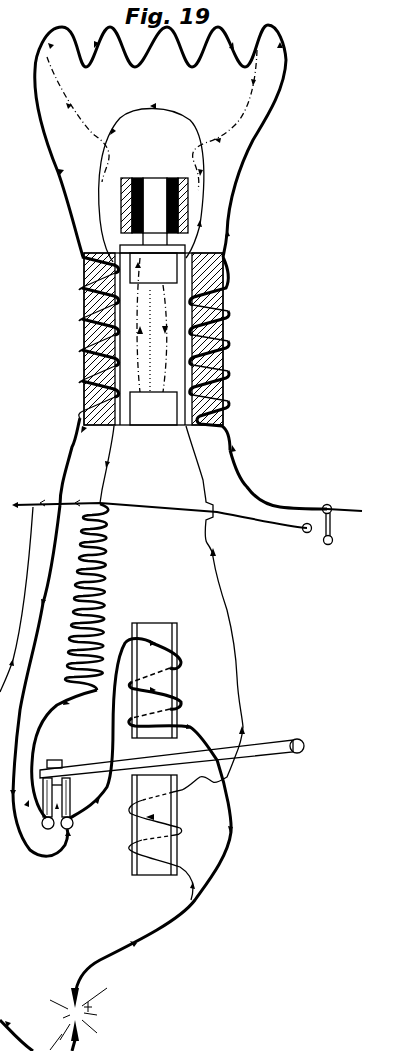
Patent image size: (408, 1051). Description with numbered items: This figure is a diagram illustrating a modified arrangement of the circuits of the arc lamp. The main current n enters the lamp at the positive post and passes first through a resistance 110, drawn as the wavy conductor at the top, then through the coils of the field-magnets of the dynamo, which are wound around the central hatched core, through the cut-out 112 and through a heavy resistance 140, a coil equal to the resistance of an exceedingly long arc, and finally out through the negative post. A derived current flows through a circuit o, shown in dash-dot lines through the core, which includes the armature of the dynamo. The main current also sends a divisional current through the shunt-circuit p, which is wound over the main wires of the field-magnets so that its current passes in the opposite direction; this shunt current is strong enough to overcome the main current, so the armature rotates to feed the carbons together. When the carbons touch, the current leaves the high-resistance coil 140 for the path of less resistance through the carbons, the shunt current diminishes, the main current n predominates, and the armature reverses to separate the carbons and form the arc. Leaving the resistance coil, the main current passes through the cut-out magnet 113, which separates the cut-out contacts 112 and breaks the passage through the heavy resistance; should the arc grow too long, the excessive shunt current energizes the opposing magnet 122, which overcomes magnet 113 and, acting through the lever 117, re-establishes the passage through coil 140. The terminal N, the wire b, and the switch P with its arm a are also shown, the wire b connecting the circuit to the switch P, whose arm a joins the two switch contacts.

The resistance 110 is at (153, 54).
The heavy resistance 140 is at (102, 597).
The cut-out magnet 113 is at (154, 673).
The magnet 122 is at (154, 834).
The lever 117 is at (172, 758).
The cut-out 112 is at (56, 812).
The main current n is at (93, 968).
The shunt-circuit p is at (186, 870).
The circuit of derived current o is at (152, 229).
The conductor terminal N is at (16, 587).
The wire b is at (163, 512).
The switch P is at (358, 506).
The switch arm a is at (336, 529).